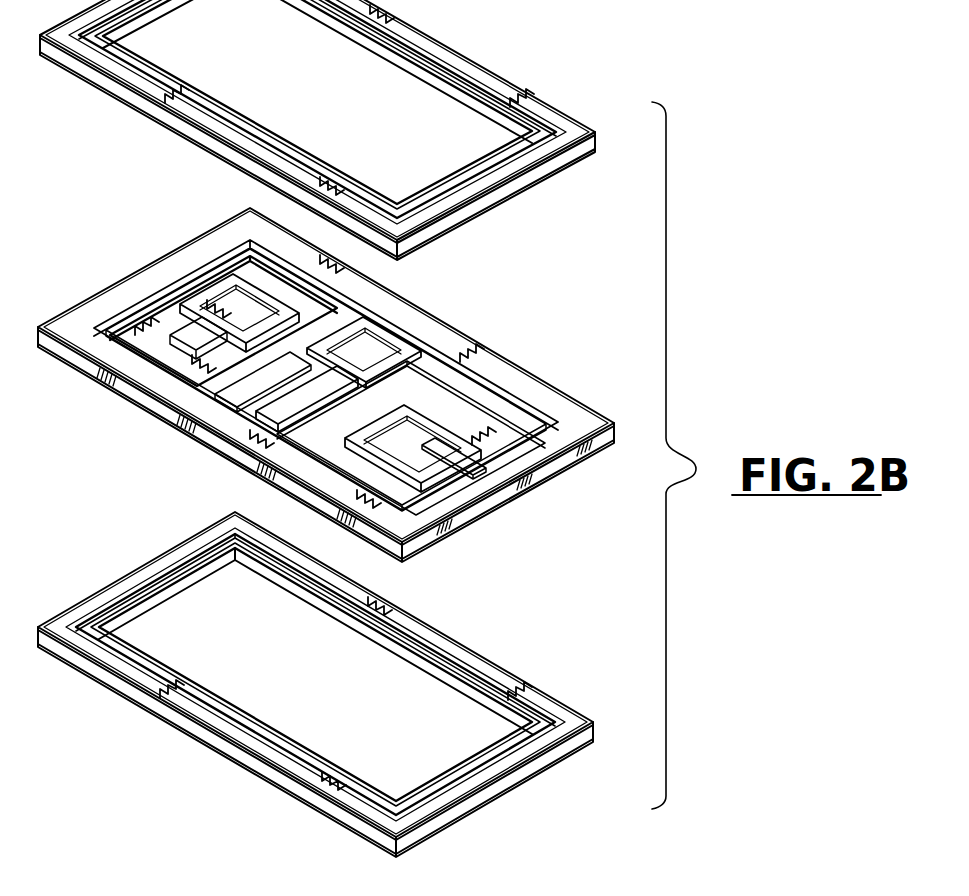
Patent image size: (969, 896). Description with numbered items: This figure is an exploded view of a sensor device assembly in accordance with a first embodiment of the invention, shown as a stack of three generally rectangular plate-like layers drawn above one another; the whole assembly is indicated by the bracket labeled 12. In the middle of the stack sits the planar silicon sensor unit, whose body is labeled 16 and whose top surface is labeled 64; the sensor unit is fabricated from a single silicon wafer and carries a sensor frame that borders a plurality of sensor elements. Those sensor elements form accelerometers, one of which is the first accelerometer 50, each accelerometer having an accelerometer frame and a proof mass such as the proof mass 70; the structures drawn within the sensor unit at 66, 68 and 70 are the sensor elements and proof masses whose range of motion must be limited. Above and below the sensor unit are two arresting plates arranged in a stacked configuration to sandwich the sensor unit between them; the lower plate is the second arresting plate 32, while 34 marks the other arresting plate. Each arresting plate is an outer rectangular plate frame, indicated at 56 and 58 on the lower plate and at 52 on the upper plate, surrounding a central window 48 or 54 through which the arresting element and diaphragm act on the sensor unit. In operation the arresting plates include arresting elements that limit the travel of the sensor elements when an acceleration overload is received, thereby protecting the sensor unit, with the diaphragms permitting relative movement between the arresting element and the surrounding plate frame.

The display assembly 12 is at (696, 468).
The substrate plate 16 is at (487, 527).
The second arresting plate 32 is at (553, 103).
The lower frame layer 34 is at (513, 786).
The upper window opening 48 is at (350, 111).
The first accelerometer 50 is at (562, 133).
The upper frame step 52 is at (437, 78).
The lower window opening 54 is at (336, 683).
The lower frame 56 is at (216, 722).
The lower frame step 58 is at (323, 772).
The plate surface 64 is at (527, 386).
The first component cavity 66 is at (178, 306).
The second component cavity 68 is at (511, 437).
The proof mass 70 is at (372, 337).